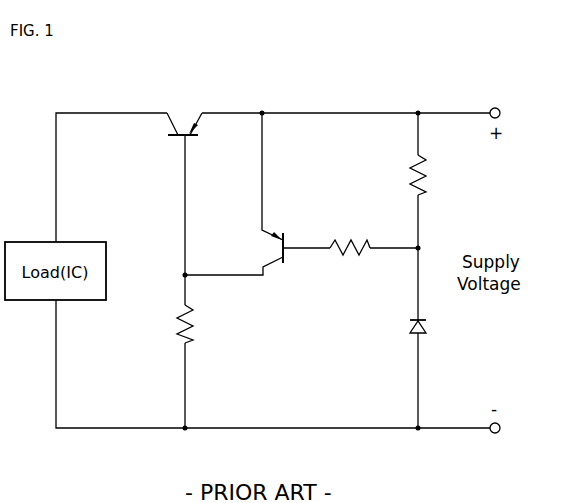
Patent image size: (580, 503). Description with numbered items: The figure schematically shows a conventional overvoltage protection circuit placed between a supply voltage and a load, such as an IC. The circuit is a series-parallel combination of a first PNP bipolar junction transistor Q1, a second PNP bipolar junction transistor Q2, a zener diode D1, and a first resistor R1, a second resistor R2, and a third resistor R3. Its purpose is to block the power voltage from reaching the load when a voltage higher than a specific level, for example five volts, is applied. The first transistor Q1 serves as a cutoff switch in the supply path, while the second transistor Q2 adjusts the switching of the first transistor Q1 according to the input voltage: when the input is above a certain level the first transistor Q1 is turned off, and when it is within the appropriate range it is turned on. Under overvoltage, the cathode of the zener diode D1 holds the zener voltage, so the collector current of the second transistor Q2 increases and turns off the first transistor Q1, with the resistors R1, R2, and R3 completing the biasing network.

The first PNP bipolar junction transistor Q1 is at (184, 111).
The second PNP bipolar junction transistor Q2 is at (257, 247).
The first resistor R1 is at (403, 175).
The second resistor R2 is at (350, 235).
The third resistor R3 is at (168, 324).
The zener diode D1 is at (402, 327).